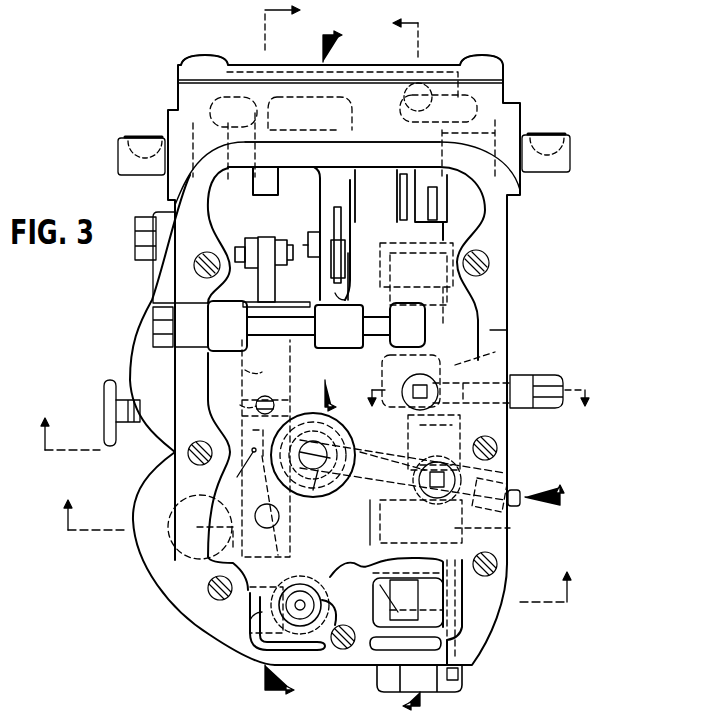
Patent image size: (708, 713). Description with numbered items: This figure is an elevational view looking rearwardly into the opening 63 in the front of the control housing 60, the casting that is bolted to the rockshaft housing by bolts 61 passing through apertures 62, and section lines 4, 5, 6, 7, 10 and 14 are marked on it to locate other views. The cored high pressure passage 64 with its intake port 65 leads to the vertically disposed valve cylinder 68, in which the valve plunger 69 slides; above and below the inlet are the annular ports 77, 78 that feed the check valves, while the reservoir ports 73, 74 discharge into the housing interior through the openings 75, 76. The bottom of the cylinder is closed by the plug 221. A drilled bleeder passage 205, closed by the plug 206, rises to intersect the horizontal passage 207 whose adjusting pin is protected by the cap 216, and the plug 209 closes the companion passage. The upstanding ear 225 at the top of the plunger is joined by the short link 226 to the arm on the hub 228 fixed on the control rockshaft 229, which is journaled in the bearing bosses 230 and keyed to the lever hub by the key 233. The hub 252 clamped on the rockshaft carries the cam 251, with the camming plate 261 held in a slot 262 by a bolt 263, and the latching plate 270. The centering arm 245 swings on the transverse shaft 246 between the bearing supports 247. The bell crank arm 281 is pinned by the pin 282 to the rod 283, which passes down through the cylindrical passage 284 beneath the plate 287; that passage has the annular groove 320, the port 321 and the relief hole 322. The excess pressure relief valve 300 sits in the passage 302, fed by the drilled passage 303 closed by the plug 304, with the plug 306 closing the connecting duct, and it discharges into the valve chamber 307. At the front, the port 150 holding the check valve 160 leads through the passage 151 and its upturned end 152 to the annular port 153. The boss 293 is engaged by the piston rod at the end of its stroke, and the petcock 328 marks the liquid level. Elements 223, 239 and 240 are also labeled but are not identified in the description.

The control housing 60 is at (506, 293).
The bolts 61 is at (204, 254).
The apertures 62 is at (196, 269).
The opening 63 is at (482, 336).
The high pressure passage 64 is at (380, 528).
The intake port 65 is at (376, 612).
The valve cylinder 68 is at (450, 321).
The valve plunger 69 is at (447, 236).
The upper annular port 73 is at (416, 274).
The lower annular port 74 is at (450, 590).
The short passage 75 is at (360, 276).
The short passage 76 is at (364, 572).
The annular port 77 is at (478, 352).
The annular port 78 is at (335, 484).
The port 150 is at (308, 583).
The passage 151 is at (252, 623).
The passage 152 is at (258, 533).
The annular port 153 is at (182, 510).
The check valve 160 is at (322, 655).
The drilled passage 205 is at (501, 526).
The plug 206 is at (459, 676).
The horizontal passage 207 is at (470, 383).
The plug 209 is at (420, 380).
The cap 216 is at (553, 380).
The plug 221 is at (432, 680).
The block 223 is at (372, 610).
The upstanding ear 225 is at (451, 203).
The short link 226 is at (400, 205).
The hub 228 is at (432, 176).
The control rockshaft 229 is at (556, 153).
The bearing bosses 230 is at (343, 108).
The key 233 is at (132, 136).
The cap 239 is at (434, 64).
The dome 240 is at (205, 58).
The centering arm 245 is at (336, 336).
The transverse shaft 246 is at (273, 338).
The bearing supports 247 is at (410, 333).
The cam 251 is at (345, 204).
The hub 252 is at (301, 233).
The camming plate 261 is at (334, 293).
The slots 262 is at (330, 263).
The bolt 263 is at (341, 246).
The latching plate 270 is at (310, 113).
The bell crank arm 281 is at (283, 245).
The pin 282 is at (239, 248).
The rod 283 is at (190, 325).
The cylindrical passage 284 is at (234, 377).
The plate 287 is at (227, 326).
The boss 293 is at (322, 486).
The sleeve type valve 300 is at (262, 456).
The passage 302 is at (290, 427).
The drilled passage 303 is at (434, 442).
The plug 304 is at (516, 490).
The plug 306 is at (432, 493).
The valve chamber 307 is at (306, 487).
The annular groove 320 is at (231, 397).
The port 321 is at (267, 396).
The small hole 322 is at (240, 473).
The petcock 328 is at (104, 406).
The section line 4 is at (301, 454).
The section line 5 is at (482, 410).
The section line 6 is at (400, 356).
The section line 7 is at (290, 351).
The section line 10 is at (341, 214).
The section line 14 is at (328, 542).